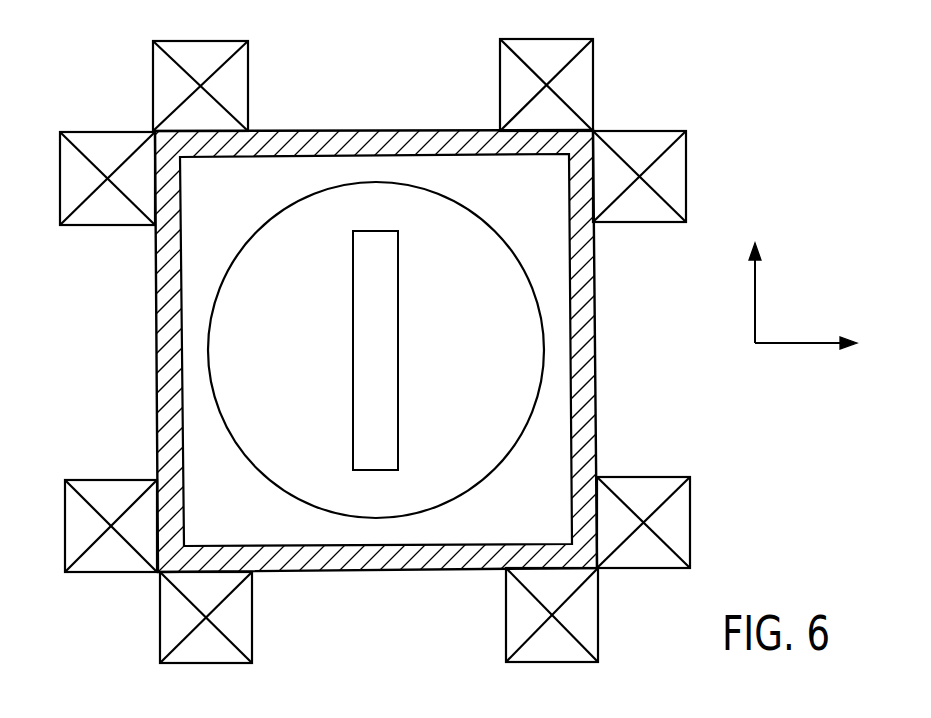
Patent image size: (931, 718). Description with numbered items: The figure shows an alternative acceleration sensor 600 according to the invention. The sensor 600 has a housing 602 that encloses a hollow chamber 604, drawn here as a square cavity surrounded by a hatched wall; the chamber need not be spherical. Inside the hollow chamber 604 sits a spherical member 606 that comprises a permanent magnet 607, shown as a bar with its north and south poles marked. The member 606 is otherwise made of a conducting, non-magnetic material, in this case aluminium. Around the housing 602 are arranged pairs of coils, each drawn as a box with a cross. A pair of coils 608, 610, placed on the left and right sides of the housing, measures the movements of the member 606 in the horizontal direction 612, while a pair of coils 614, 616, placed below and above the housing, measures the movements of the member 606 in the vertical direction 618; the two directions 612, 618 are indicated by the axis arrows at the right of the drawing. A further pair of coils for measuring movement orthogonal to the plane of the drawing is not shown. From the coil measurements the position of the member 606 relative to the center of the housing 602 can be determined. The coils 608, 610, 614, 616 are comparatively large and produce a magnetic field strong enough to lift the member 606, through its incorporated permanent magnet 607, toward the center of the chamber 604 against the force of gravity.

The sensor 600 is at (757, 550).
The housing 602 is at (578, 260).
The hollow chamber 604 is at (480, 515).
The spherical member 606 is at (253, 473).
The permanent magnet 607 is at (390, 341).
The coil 608 is at (82, 225).
The coil 610 is at (666, 212).
The direction 612 is at (782, 345).
The coil 614 is at (512, 639).
The coil 616 is at (505, 73).
The direction 618 is at (757, 288).